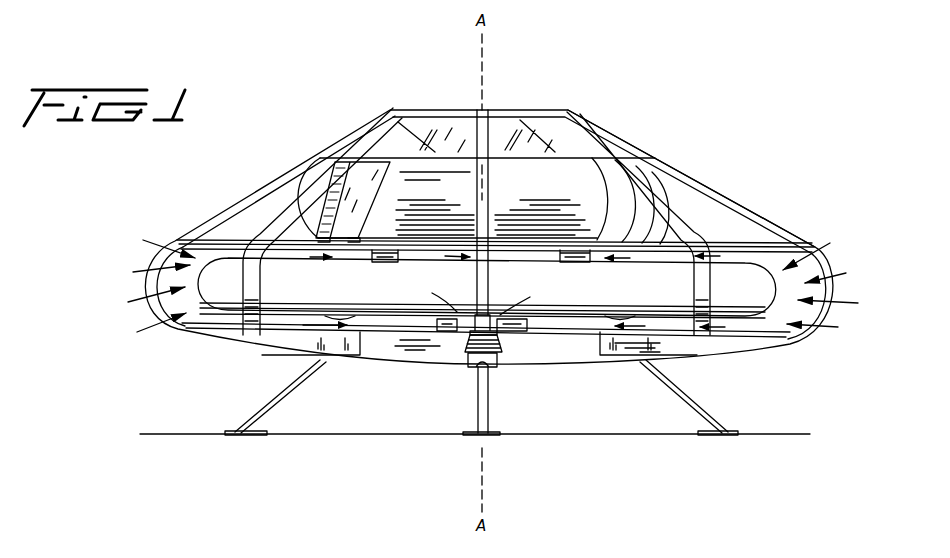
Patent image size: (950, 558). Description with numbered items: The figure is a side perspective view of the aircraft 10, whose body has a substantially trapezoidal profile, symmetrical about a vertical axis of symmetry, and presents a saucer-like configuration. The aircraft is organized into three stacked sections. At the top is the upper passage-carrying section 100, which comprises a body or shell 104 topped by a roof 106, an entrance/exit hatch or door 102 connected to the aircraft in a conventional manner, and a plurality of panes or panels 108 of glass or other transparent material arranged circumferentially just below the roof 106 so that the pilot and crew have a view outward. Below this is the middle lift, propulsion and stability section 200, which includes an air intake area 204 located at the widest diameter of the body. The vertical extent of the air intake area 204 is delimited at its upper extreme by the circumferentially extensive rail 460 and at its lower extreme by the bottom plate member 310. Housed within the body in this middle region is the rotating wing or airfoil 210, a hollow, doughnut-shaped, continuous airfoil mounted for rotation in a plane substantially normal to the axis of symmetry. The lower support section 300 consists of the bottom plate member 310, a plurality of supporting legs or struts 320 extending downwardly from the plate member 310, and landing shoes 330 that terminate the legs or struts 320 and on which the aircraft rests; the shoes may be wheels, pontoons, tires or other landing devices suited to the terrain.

The aircraft 10 is at (277, 76).
The upper passage-carrying section 100 is at (626, 119).
The entrance/exit hatch or door 102 is at (360, 180).
The body or shell 104 is at (314, 178).
The roof 106 is at (462, 107).
The panes or panels 108 is at (412, 104).
The middle lift, propulsion and stability section 200 is at (128, 320).
The air intake area 204 is at (152, 256).
The rotating wing or airfoil 210 is at (380, 291).
The lower support section 300 is at (748, 395).
The bottom plate member 310 is at (395, 358).
The supporting legs or struts 320 is at (277, 397).
The landing shoes 330 is at (472, 436).
The circumferentially extensive rail 460 is at (212, 245).